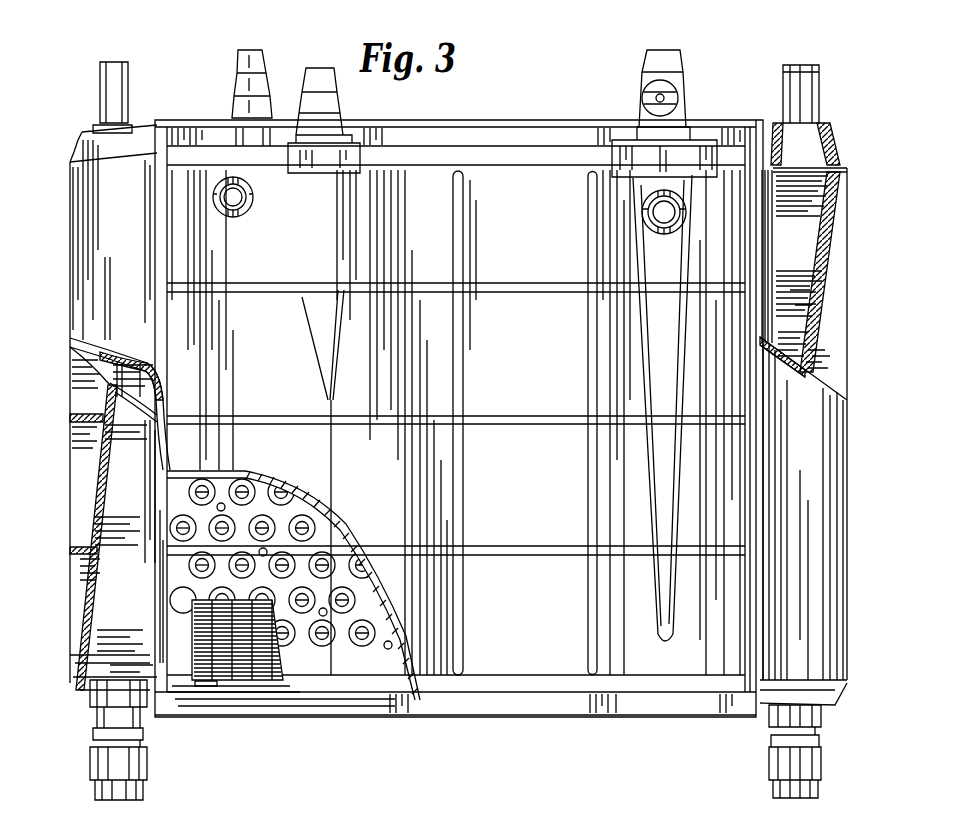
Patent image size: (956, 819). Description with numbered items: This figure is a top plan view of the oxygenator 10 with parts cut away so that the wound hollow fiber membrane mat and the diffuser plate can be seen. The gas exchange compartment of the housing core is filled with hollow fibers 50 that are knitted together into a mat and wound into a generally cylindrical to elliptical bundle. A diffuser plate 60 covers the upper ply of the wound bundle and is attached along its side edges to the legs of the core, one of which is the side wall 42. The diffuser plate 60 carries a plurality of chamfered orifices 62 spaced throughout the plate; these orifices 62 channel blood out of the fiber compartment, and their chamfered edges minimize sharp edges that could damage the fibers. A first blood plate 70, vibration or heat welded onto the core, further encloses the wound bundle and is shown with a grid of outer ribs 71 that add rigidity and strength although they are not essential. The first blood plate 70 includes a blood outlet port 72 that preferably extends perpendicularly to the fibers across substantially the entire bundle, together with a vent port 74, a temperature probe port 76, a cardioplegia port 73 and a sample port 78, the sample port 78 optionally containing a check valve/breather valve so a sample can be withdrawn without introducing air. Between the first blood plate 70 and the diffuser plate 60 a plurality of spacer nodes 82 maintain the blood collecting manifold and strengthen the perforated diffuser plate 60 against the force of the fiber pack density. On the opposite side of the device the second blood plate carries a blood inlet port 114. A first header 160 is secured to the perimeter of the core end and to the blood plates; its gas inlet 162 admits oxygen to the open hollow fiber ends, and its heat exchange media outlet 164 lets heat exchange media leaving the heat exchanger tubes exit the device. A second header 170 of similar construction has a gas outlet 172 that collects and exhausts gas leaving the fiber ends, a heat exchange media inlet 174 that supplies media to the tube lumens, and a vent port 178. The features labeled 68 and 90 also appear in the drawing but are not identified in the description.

The oxygenator 10 is at (470, 105).
The first side wall 42 is at (283, 698).
The hollow fibers 50 is at (195, 672).
The diffuser plate 60 is at (397, 675).
The chamfered orifices 62 is at (325, 560).
The slot 68 is at (203, 688).
The first blood plate 70 is at (505, 337).
The outer ribs 71 is at (240, 292).
The blood outlet port 72 is at (647, 55).
The cardioplegia port 73 is at (326, 52).
The vent port 74 is at (250, 200).
The temperature probe port 76 is at (645, 216).
The sample port 78 is at (664, 98).
The spacer nodes 82 is at (263, 548).
The seal 90 is at (150, 660).
The blood inlet port 114 is at (252, 54).
The first header 160 is at (64, 276).
The gas inlet 162 is at (115, 62).
The heat exchange media outlet 164 is at (110, 802).
The second header 170 is at (855, 322).
The gas outlet 172 is at (783, 80).
The heat exchange media inlet 174 is at (780, 797).
The vent port 178 is at (838, 168).